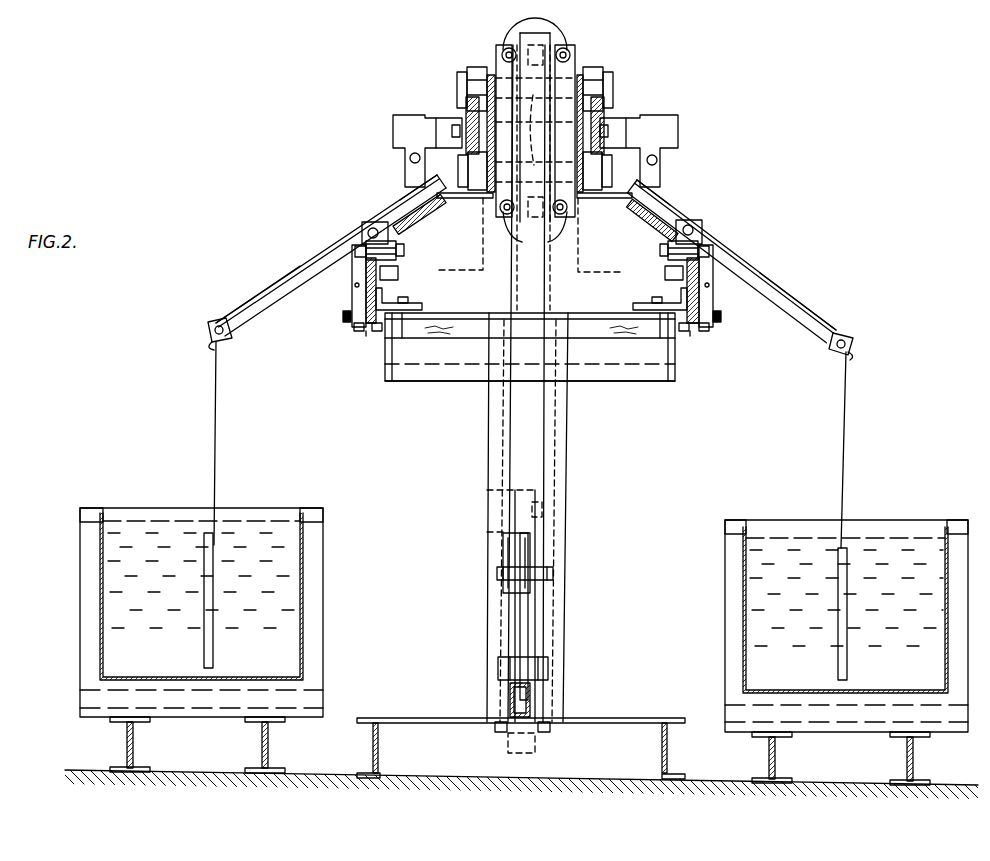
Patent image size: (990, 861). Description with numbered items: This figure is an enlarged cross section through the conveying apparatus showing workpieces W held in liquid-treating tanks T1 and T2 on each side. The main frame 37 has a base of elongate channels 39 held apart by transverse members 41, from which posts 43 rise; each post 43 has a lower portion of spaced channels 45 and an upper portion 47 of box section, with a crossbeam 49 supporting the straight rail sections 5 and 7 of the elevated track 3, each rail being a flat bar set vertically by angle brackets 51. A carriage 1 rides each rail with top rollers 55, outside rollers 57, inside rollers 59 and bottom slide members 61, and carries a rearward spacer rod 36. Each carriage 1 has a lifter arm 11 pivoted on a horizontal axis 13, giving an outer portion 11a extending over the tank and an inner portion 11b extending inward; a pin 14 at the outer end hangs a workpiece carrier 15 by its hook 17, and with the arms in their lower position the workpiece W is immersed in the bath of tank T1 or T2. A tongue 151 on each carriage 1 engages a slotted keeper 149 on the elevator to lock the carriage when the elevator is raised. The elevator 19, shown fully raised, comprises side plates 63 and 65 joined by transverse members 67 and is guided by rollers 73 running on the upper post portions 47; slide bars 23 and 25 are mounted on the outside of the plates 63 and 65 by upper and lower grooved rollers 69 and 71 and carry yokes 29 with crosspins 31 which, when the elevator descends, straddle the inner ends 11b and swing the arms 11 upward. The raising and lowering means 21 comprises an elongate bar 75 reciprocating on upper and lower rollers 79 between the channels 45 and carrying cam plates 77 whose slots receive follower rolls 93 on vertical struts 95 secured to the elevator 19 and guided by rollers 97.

The carriage 1 is at (352, 270).
The elevated track 3 is at (362, 299).
The straight rail section 5 is at (372, 332).
The straight rail section 7 is at (686, 332).
The arm 11 is at (300, 265).
The outer arm portion 11a is at (256, 299).
The inner arm portion 11b is at (432, 184).
The pivot axis 13 is at (368, 230).
The pin 14 is at (226, 340).
The workpiece carrier 15 is at (214, 428).
The hook 17 is at (204, 346).
The elevator 19 is at (630, 82).
The elevator raising and lowering means 21 is at (516, 628).
The slide bar 23 is at (470, 112).
The slide bar 25 is at (600, 118).
The coupler or yoke 29 is at (395, 120).
The crosspin 31 is at (408, 158).
The spacer rod 36 is at (360, 256).
The main frame 37 is at (394, 380).
The elongate channels 39 is at (374, 718).
The transverse members 41 is at (607, 720).
The post 43 is at (484, 466).
The spaced channels 45 is at (488, 482).
The upper post portion 47 is at (547, 291).
The crossbeam 49 is at (605, 373).
The angle bracket 51 is at (408, 306).
The top rollers 55 is at (392, 246).
The outside rollers 57 is at (343, 316).
The inside rollers 59 is at (398, 278).
The bottom slide members 61 is at (358, 332).
The elevator side plate 63 is at (490, 78).
The elevator side plate 65 is at (582, 78).
The transverse members 67 is at (535, 127).
The upper grooved rollers 69 is at (462, 74).
The lower grooved rollers 71 is at (461, 168).
The elevator guide rollers 73 is at (535, 132).
The elongate bar 75 is at (531, 700).
The cam plate 77 is at (528, 605).
The upper and lower rollers 79 is at (528, 665).
The follower roll 93 is at (531, 594).
The vertical strut 95 is at (512, 431).
The guide rollers 97 is at (545, 510).
The slotted keeper 149 is at (455, 199).
The tongue 151 is at (432, 210).
The tank T1 is at (100, 508).
The tank T2 is at (756, 521).
The workpiece W is at (213, 646).